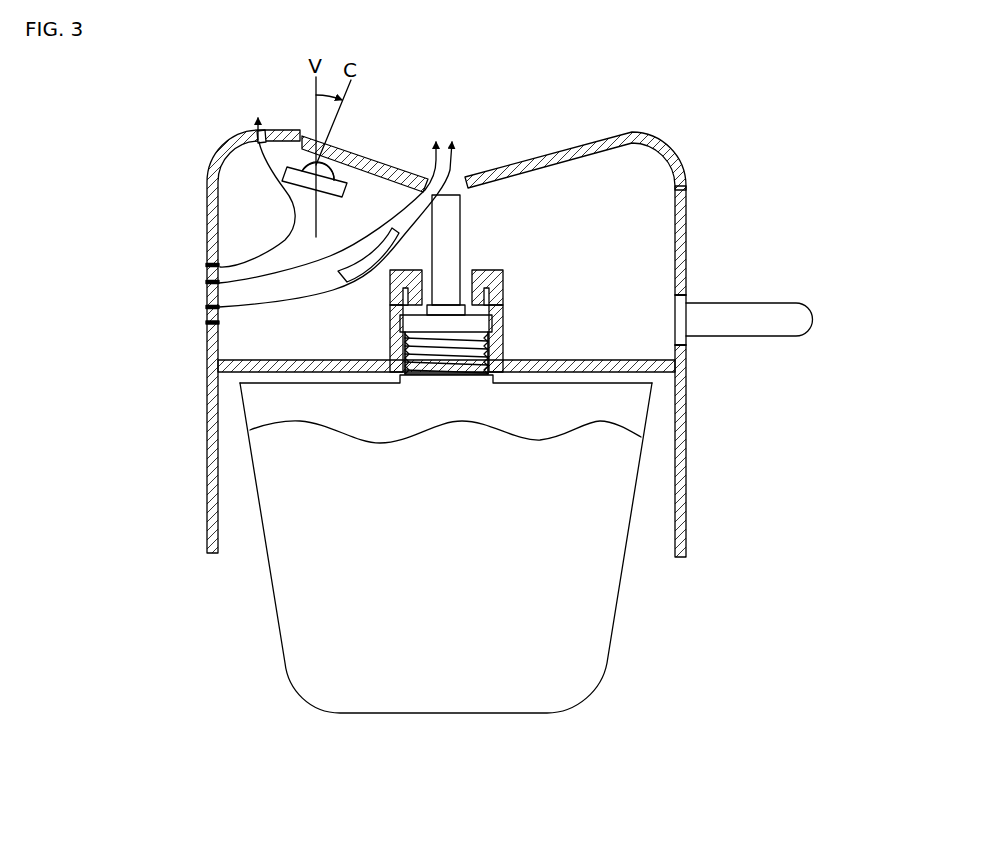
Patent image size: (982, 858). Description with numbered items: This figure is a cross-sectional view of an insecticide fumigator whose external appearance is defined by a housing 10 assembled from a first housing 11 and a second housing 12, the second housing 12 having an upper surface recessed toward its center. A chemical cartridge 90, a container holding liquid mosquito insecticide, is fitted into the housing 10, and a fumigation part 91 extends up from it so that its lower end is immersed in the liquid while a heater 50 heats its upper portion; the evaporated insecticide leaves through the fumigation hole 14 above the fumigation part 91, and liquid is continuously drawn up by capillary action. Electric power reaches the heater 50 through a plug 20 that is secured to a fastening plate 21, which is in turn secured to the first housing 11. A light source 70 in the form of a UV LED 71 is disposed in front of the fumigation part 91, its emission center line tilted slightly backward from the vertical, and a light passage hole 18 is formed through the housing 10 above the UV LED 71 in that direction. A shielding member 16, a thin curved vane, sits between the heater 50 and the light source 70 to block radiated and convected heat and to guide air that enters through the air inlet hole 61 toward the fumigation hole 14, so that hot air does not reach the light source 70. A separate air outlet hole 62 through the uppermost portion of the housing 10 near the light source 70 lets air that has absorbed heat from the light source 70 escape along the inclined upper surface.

The housing 10 is at (859, 257).
The first housing 11 is at (686, 453).
The second housing 12 is at (686, 256).
The fumigation hole 14 is at (465, 182).
The shielding member 16 is at (333, 290).
The light passage hole 18 is at (337, 148).
The plug 20 is at (748, 328).
The fastening plate 21 is at (686, 302).
The heater 50 is at (503, 288).
The air inlet hole 61 is at (218, 282).
The air outlet hole 62 is at (257, 128).
The light source 70 is at (280, 181).
The UV LED 71 is at (315, 163).
The chemical cartridge 90 is at (432, 712).
The fumigation part 91 is at (460, 232).